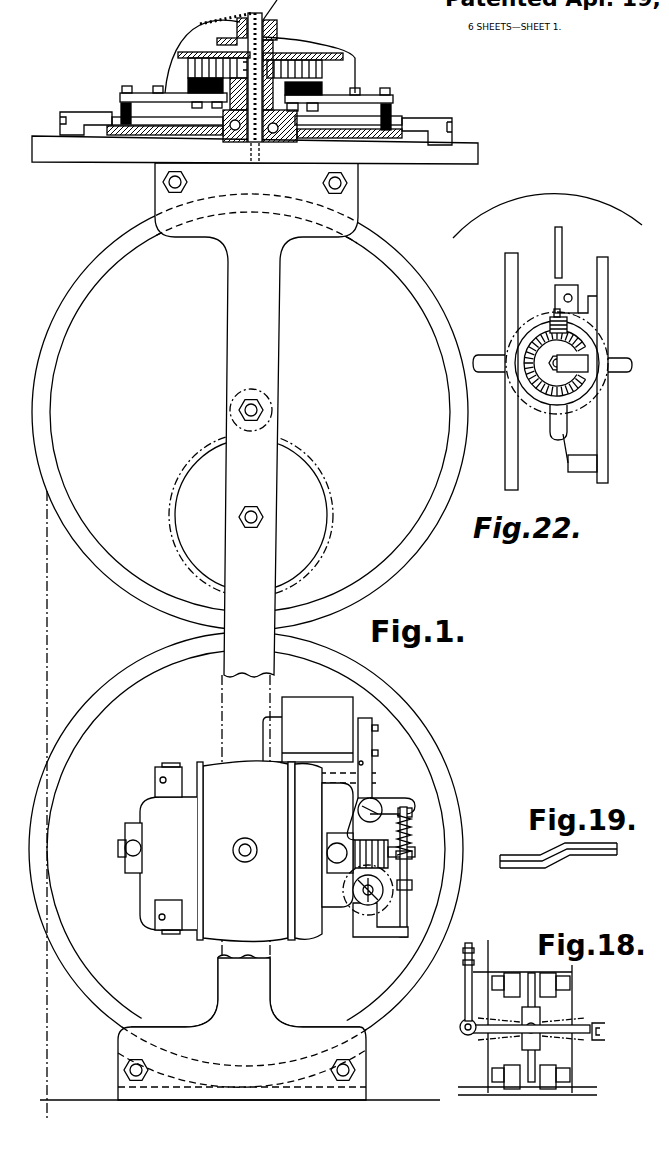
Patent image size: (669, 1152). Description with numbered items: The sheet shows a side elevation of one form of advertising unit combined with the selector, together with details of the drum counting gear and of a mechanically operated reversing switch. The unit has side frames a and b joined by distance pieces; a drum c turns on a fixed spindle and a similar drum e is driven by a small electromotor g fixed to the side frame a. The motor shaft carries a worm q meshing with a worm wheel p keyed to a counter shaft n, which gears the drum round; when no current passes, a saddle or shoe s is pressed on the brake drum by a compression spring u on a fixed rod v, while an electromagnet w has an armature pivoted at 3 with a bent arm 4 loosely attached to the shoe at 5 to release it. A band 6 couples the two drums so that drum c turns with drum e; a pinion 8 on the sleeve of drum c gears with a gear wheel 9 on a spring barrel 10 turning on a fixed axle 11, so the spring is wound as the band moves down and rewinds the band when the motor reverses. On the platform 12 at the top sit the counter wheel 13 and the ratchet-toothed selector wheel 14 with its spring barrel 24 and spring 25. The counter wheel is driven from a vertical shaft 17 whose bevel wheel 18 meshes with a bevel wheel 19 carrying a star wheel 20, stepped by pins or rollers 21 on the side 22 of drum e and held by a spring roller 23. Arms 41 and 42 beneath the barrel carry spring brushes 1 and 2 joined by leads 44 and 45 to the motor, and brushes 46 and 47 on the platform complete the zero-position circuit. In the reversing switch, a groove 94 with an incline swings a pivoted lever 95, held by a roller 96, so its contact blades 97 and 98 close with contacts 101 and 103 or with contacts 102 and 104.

In FIG. 1, the spring brush 1 is at (122, 115).
In FIG. 1, the spring brush 2 is at (390, 115).
In FIG. 1, the armature pivot 3 is at (372, 745).
In FIG. 1, the bent arm 4 is at (413, 800).
In FIG. 1, the attachment point 5 is at (413, 808).
In FIG. 1, the band 6 is at (50, 603).
In FIG. 1, the pinion 8 is at (270, 397).
In FIG. 1, the gear wheel 9 is at (332, 484).
In FIG. 1, the spring barrel 10 is at (178, 476).
In FIG. 1, the fixed axle 11 is at (263, 518).
In FIG. 1, the platform 12 is at (438, 157).
In FIG. 1, the counter wheel 13 is at (152, 134).
In FIG. 1, the selector wheel 14 is at (345, 53).
In FIG. 22, the vertical shaft 17 is at (562, 233).
In FIG. 22, the bevel wheel 18 is at (575, 322).
In FIG. 22, the bevel wheel 19 is at (586, 394).
In FIG. 22, the star wheel 20 is at (546, 323).
In FIG. 22, the pins or rollers 21 is at (569, 292).
In FIG. 22, the drum side 22 is at (572, 202).
In FIG. 22, the spring roller 23 is at (561, 441).
In FIG. 1, the spring barrel 24 is at (327, 72).
In FIG. 1, the spring 25 is at (178, 55).
In FIG. 1, the arm 41 is at (145, 95).
In FIG. 1, the arm 42 is at (370, 98).
In FIG. 1, the lead 44 is at (180, 36).
In FIG. 1, the lead 45 is at (305, 40).
In FIG. 1, the spring conducting brush 46 is at (113, 113).
In FIG. 1, the spring conducting brush 47 is at (408, 128).
In FIG. 19, the groove 94 is at (601, 851).
In FIG. 18, the groove 94 is at (604, 1028).
In FIG. 18, the pivoted lever 95 is at (505, 1033).
In FIG. 18, the roller 96 is at (460, 1028).
In FIG. 18, the contact blade 97 is at (540, 972).
In FIG. 18, the contact blade 98 is at (531, 1086).
In FIG. 18, the contact screw 101 is at (465, 985).
In FIG. 18, the contact screw 102 is at (492, 1088).
In FIG. 18, the contact screw 103 is at (575, 1082).
In FIG. 18, the contact screw 104 is at (572, 978).
In FIG. 1, the side frame a is at (238, 357).
In FIG. 22, the side frame b is at (608, 303).
In FIG. 1, the drum c is at (34, 392).
In FIG. 1, the drum e is at (115, 695).
In FIG. 1, the electromotor g is at (210, 773).
In FIG. 1, the counter shaft n is at (368, 905).
In FIG. 1, the worm wheel p is at (356, 900).
In FIG. 1, the worm q is at (410, 816).
In FIG. 1, the saddle or shoe s is at (410, 843).
In FIG. 1, the compression spring u is at (412, 856).
In FIG. 1, the fixed rod v is at (404, 908).
In FIG. 1, the electromagnet w is at (343, 702).